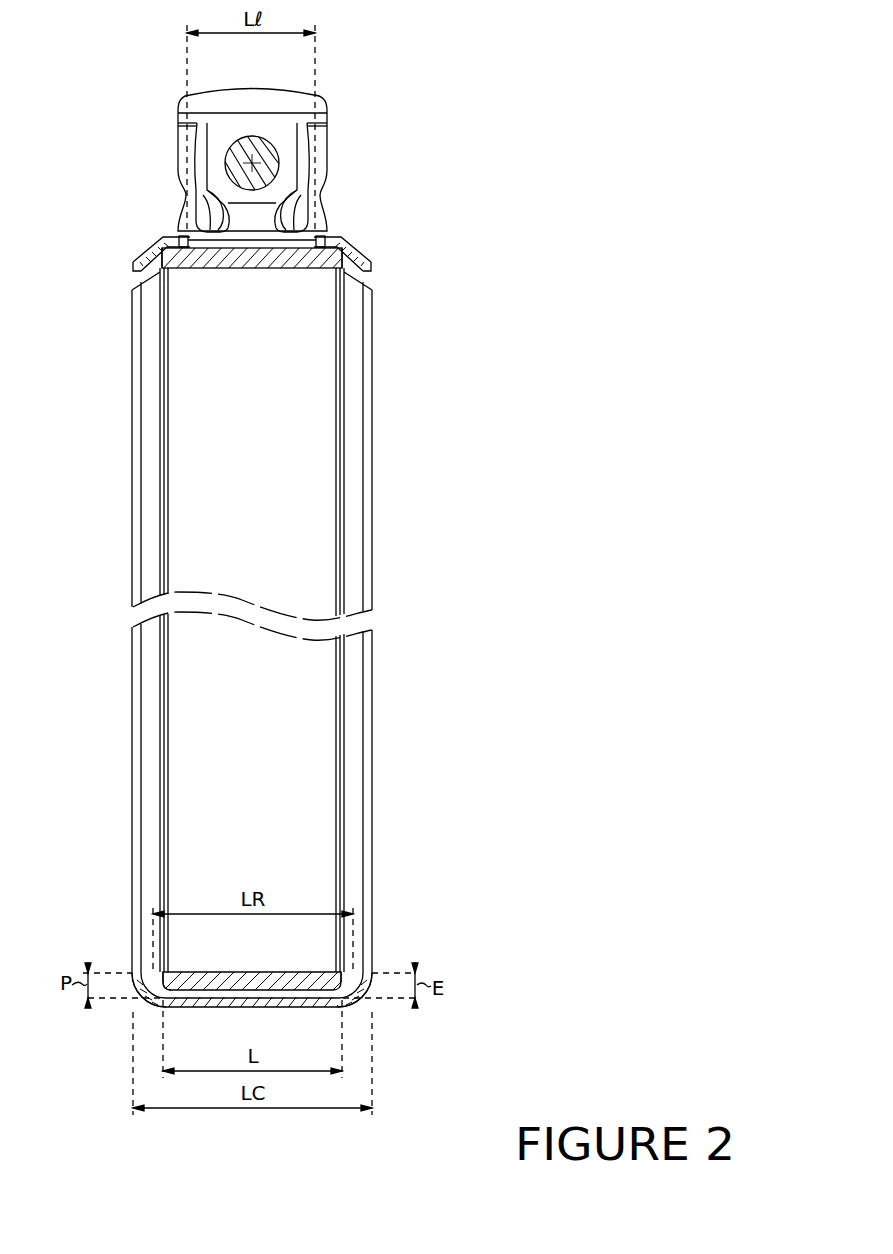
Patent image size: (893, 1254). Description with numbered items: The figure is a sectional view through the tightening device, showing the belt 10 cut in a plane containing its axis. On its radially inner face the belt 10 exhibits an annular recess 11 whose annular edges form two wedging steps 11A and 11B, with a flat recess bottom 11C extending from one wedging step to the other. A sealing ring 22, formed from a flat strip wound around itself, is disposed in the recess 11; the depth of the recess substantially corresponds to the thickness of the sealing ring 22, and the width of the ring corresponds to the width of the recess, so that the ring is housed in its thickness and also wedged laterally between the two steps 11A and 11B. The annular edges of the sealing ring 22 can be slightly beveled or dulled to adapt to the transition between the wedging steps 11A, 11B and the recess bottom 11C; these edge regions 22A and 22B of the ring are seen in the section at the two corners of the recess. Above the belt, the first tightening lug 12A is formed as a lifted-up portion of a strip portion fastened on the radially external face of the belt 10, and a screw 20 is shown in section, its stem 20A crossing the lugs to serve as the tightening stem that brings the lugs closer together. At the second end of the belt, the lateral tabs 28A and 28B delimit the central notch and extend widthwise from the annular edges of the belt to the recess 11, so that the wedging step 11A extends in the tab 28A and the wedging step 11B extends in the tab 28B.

The belt 10 is at (290, 1007).
The annular recess 11 is at (250, 252).
The wedging step 11A is at (330, 253).
The wedging step 11B is at (170, 253).
The recess bottom 11C is at (205, 985).
The first tightening lug 12A is at (252, 100).
The screw 20 is at (216, 146).
The stem 20A is at (233, 170).
The sealing ring 22 is at (290, 787).
The can first bent corner 22A is at (342, 1007).
The can second bent corner 22B is at (167, 1007).
The lateral tab 28A is at (354, 252).
The lateral tab 28B is at (150, 250).